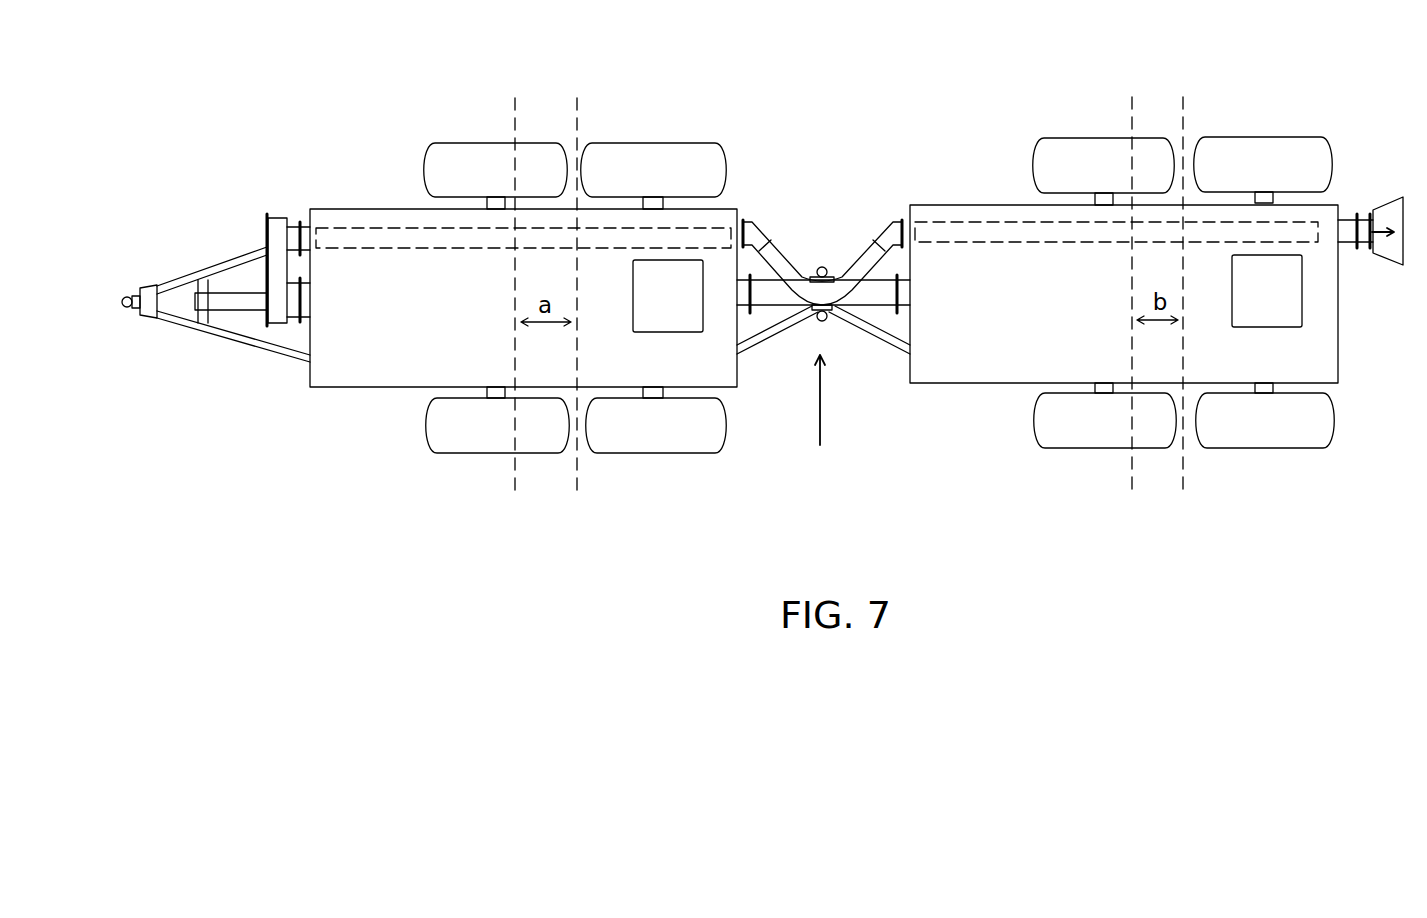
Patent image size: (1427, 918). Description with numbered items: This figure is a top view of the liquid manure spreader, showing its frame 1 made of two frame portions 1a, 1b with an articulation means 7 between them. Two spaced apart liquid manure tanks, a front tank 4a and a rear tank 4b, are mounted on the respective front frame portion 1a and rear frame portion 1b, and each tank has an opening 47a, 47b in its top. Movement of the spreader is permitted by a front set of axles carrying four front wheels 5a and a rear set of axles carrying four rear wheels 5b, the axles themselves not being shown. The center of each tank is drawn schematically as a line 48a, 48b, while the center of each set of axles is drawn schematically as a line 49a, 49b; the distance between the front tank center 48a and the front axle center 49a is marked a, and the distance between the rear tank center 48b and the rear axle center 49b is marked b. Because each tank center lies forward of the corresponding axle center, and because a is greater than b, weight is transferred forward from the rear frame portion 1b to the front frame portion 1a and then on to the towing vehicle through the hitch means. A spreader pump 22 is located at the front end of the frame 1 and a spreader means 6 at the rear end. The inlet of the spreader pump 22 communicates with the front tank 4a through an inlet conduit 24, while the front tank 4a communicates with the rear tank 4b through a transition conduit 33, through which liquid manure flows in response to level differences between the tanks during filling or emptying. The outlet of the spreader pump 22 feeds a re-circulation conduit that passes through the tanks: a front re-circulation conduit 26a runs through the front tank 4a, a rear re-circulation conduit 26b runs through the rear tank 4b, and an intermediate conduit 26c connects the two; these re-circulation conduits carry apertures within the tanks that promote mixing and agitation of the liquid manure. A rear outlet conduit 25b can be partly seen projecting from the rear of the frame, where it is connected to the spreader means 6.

The frame 1 is at (177, 253).
The front frame portion 1a is at (757, 340).
The rear frame portion 1b is at (888, 340).
The front tank 4a is at (355, 368).
The rear tank 4b is at (980, 368).
The front wheels 5a is at (450, 163).
The rear wheels 5b is at (1045, 155).
The spreader means 6 is at (1407, 166).
The articulation means 7 is at (820, 413).
The spreader pump 22 is at (280, 252).
The inlet conduit 24 is at (305, 300).
The rear outlet conduit 25b is at (1348, 228).
The front re-circulation conduit 26a is at (370, 240).
The rear re-circulation conduit 26b is at (955, 235).
The intermediate conduit 26c is at (870, 260).
The transition conduit 33 is at (768, 295).
The opening 47a is at (665, 310).
The opening 47b is at (1262, 310).
The center of the front tank 48a is at (513, 122).
The center of the front set of axles 49a is at (575, 125).
The center of the rear tank 48b is at (1130, 120).
The center of the rear set of axles 49b is at (1185, 103).